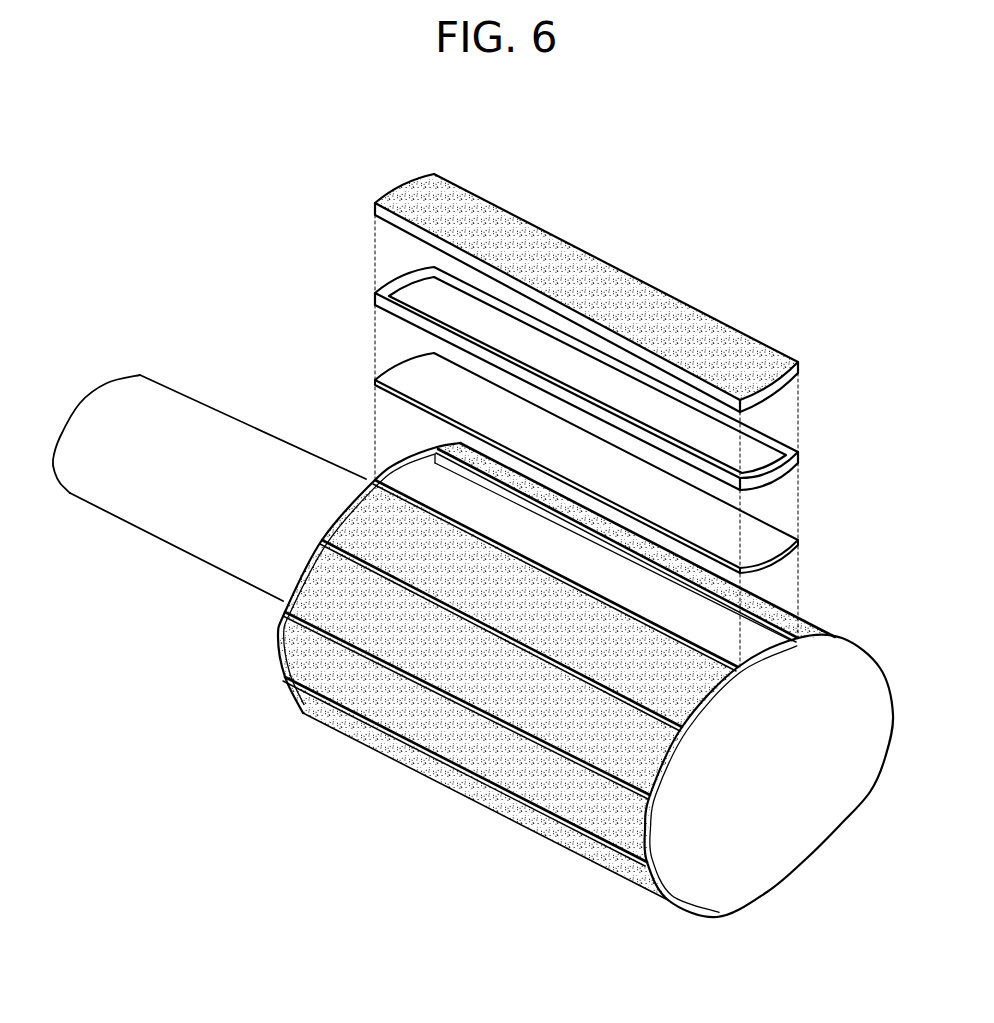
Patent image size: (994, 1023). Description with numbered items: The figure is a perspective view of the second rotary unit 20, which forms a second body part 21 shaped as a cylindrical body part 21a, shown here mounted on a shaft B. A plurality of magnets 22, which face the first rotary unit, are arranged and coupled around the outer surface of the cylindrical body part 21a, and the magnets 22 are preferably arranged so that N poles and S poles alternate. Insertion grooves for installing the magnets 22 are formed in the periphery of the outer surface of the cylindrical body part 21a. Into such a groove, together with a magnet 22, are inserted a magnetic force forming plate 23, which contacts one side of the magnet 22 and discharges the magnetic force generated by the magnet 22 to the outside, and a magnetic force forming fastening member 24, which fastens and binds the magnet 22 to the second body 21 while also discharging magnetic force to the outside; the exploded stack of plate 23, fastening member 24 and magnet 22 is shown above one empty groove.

The second rotary unit 20 is at (633, 391).
The magnet 22 is at (765, 353).
The magnetic force forming fastening member 24 is at (770, 433).
The magnetic force forming plate 23 is at (767, 537).
The second body part 21 is at (585, 724).
The cylindrical body part 21a is at (585, 560).
The shaft B is at (158, 410).